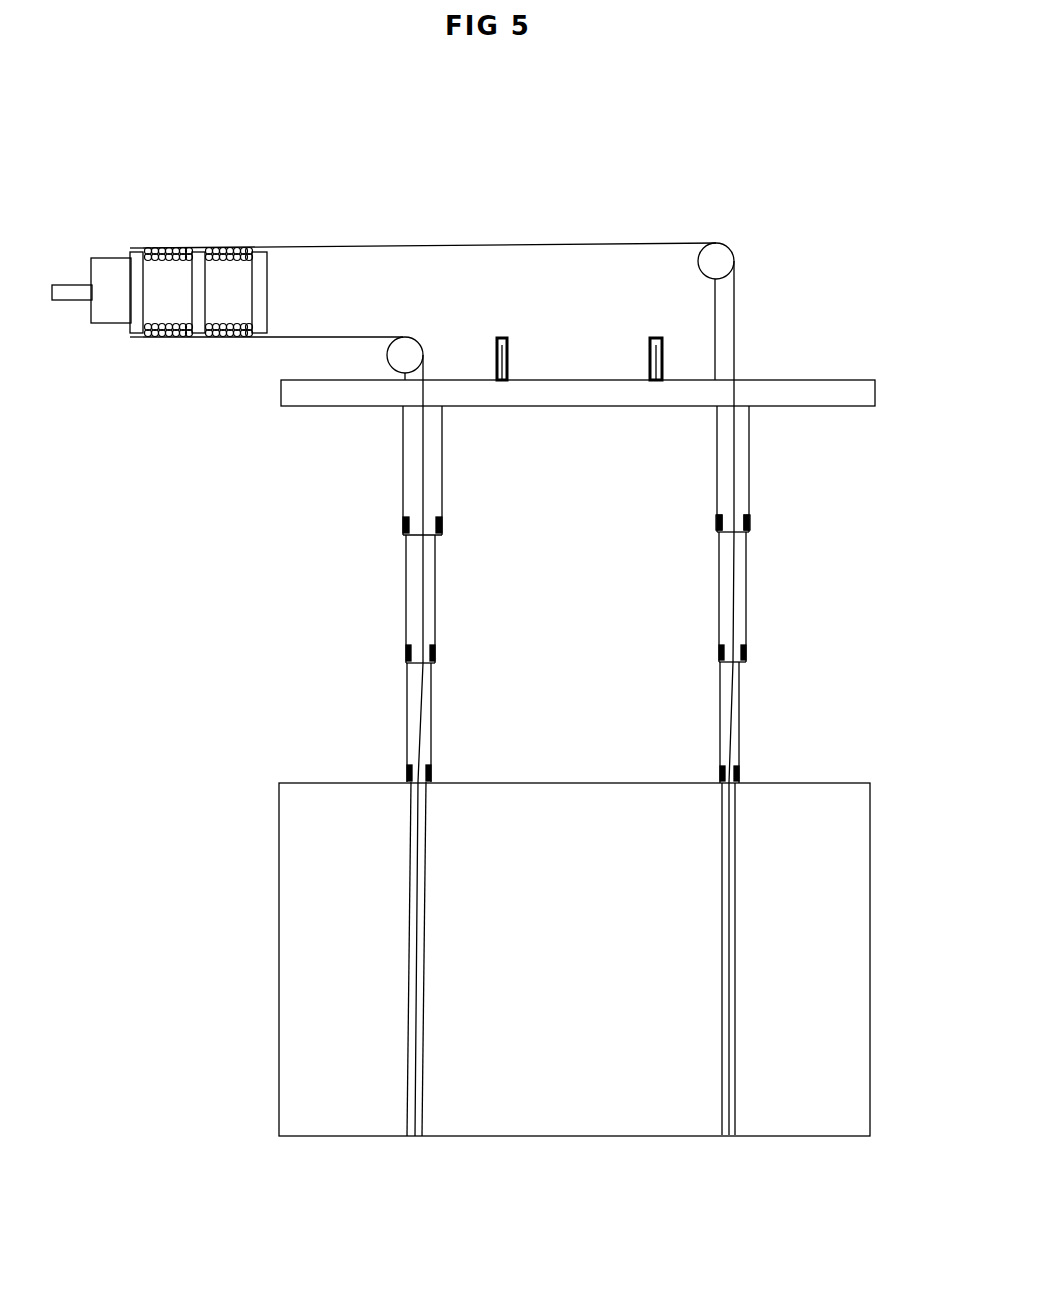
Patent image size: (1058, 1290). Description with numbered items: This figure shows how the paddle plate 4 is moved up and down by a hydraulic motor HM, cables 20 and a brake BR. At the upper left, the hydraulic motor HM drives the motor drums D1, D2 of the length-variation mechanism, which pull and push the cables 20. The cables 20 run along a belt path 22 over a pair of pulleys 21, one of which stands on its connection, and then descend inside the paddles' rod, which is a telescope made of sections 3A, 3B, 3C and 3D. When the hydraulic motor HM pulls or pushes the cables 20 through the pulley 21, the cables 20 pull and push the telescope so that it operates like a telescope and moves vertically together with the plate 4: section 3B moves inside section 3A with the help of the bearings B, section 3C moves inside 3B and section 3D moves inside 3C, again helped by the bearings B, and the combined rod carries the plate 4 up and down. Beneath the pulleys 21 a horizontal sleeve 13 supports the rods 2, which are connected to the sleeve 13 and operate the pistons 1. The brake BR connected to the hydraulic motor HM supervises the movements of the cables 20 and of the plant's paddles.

The hydraulic motor HM is at (57, 293).
The brake BR is at (107, 270).
The motor D1 is at (165, 340).
The motor D2 is at (218, 342).
The sleeve 13 is at (280, 400).
The pulley 21 is at (408, 352).
The belt 22 is at (715, 322).
The rods 2 is at (497, 363).
The pistons 1 is at (507, 365).
The cables 20 is at (623, 771).
The telescope section 3A is at (750, 496).
The telescope section 3B is at (746, 604).
The telescope section 3C is at (739, 726).
The telescope section 3D is at (735, 1004).
The bearings B is at (716, 520).
The plate 4 is at (845, 892).